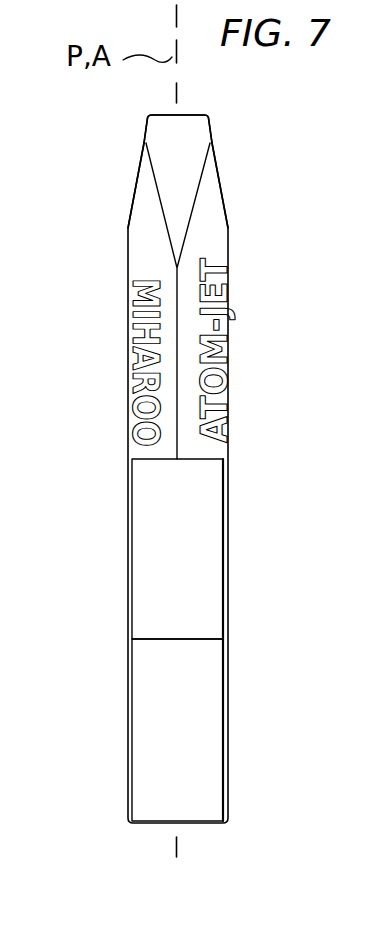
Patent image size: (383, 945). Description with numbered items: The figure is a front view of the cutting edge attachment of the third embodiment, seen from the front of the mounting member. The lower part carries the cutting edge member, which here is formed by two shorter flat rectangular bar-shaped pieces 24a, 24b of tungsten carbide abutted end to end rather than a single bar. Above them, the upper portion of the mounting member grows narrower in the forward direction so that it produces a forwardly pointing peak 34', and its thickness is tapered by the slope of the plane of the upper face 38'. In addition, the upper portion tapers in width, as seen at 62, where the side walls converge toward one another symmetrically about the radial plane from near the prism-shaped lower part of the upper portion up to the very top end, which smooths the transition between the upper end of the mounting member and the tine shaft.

The flat rectangular bar-shaped piece 24a is at (205, 547).
The flat rectangular bar-shaped piece 24b is at (200, 740).
The forwardly pointing peak 34' is at (136, 301).
The upper face 38' is at (215, 135).
The taper in width 62 is at (133, 160).